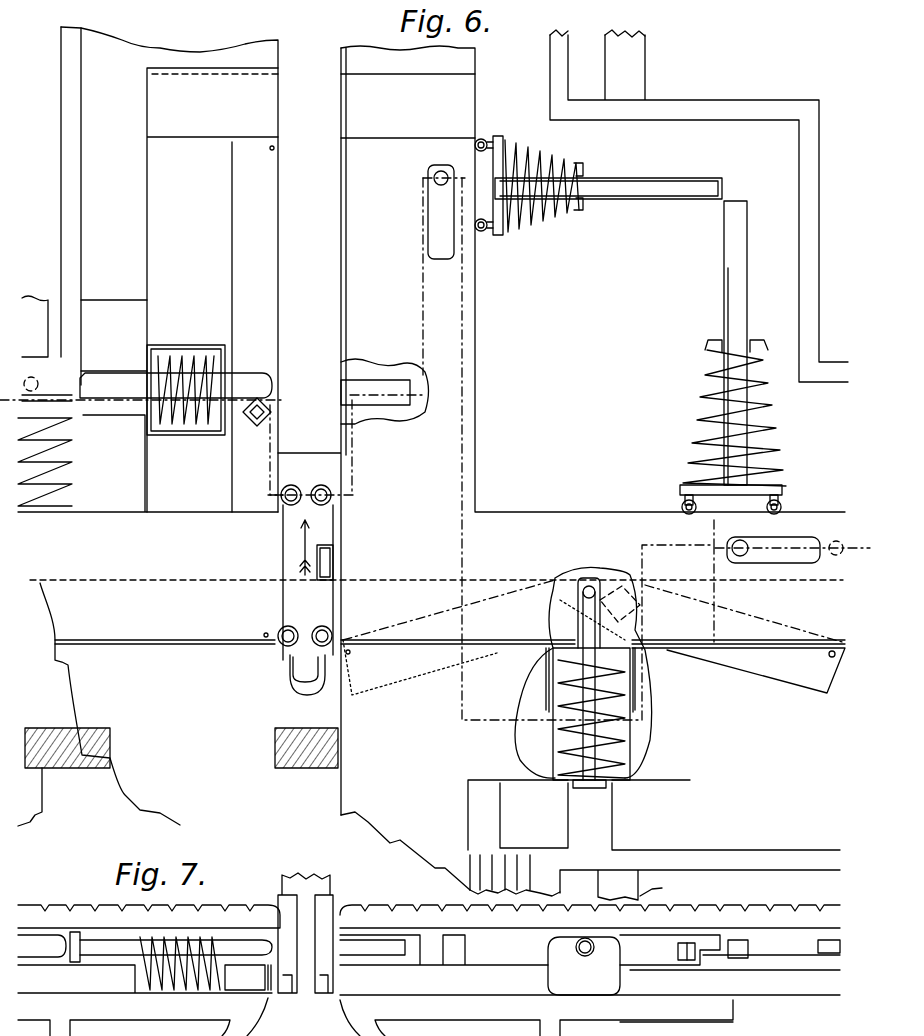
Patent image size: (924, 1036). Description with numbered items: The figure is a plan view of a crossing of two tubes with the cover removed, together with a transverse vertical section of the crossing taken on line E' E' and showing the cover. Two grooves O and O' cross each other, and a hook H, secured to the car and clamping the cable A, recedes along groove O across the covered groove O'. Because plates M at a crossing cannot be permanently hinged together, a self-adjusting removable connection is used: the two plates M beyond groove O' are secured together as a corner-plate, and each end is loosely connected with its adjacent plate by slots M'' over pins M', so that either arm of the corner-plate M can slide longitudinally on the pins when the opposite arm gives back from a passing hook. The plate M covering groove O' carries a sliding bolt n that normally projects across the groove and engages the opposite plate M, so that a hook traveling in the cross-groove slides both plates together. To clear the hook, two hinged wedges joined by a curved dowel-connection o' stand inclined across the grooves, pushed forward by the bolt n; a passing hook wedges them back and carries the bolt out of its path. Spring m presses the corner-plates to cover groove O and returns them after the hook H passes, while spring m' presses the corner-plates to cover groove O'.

In FIG. 6, the cable A is at (345, 584).
In FIG. 6, the section line E' E' is at (446, 466).
In FIG. 6, the bolt n is at (343, 580).
In FIG. 7, the bolt n is at (584, 966).
In FIG. 6, the spring m is at (300, 515).
In FIG. 6, the spring m' is at (741, 427).
In FIG. 6, the plate M is at (518, 473).
In FIG. 7, the plate M is at (429, 954).
In FIG. 6, the pin M' is at (633, 287).
In FIG. 7, the pin M' is at (713, 950).
In FIG. 6, the slot M'' is at (621, 366).
In FIG. 7, the slot M'' is at (811, 945).
In FIG. 6, the curved dowel-connection o' is at (441, 509).
In FIG. 6, the groove O is at (244, 458).
In FIG. 6, the groove O' is at (435, 696).
In FIG. 6, the hook H is at (307, 607).